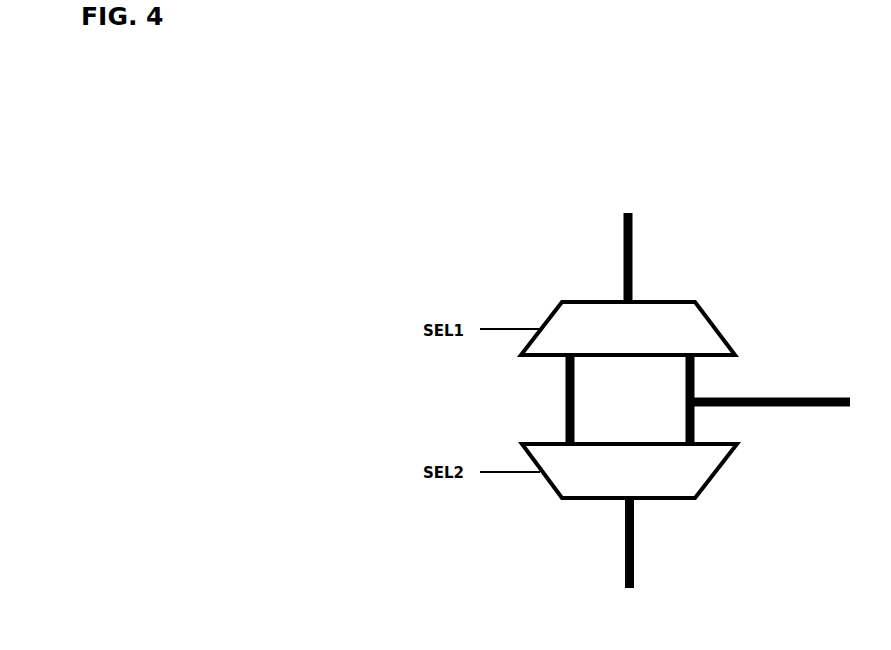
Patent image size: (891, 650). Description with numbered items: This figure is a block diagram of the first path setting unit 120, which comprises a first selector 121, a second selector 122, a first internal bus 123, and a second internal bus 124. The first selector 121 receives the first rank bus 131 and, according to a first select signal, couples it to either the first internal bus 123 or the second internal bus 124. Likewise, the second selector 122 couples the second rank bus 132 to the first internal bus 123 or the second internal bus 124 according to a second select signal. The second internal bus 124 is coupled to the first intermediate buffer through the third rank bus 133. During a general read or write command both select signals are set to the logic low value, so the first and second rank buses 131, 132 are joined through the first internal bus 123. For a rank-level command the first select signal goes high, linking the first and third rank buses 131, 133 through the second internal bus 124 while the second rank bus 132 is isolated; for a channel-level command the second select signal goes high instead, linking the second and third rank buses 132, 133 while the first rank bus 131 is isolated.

The path setting unit 120 is at (262, 177).
The first selector 121 is at (707, 317).
The second selector 122 is at (713, 472).
The first internal bus 123 is at (565, 417).
The second internal bus 124 is at (686, 420).
The first rank bus 131 is at (624, 256).
The second rank bus 132 is at (625, 565).
The third rank bus 133 is at (782, 397).